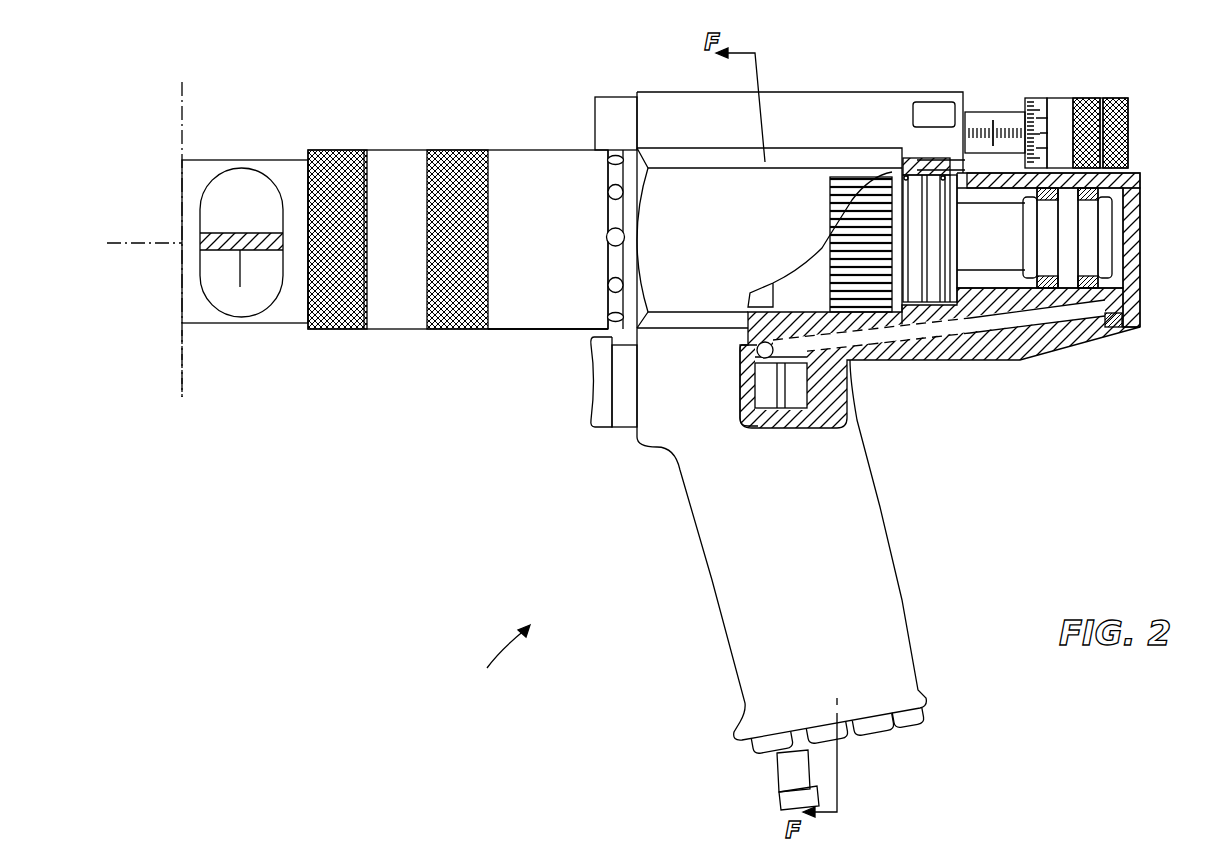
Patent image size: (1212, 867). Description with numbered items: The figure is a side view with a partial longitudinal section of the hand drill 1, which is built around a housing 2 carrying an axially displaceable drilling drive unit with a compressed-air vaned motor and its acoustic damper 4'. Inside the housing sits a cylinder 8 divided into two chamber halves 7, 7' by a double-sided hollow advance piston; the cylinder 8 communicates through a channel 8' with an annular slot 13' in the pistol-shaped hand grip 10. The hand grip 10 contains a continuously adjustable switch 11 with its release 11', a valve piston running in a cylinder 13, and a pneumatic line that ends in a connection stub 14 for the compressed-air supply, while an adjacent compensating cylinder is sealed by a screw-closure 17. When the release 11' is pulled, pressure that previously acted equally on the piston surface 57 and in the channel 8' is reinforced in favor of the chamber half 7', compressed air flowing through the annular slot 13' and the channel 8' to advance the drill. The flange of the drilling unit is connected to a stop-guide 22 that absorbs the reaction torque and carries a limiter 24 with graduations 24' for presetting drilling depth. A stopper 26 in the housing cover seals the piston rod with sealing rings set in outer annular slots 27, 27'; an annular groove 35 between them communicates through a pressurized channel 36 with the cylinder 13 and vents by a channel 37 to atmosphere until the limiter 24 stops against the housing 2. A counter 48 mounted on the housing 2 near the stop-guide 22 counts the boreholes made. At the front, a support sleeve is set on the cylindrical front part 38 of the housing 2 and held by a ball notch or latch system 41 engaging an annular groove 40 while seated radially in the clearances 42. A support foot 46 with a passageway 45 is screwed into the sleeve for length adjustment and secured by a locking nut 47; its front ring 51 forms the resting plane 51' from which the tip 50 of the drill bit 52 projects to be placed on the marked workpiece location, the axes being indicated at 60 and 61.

The hand drill 1 is at (503, 654).
The housing 2 is at (668, 110).
The acoustic damper 4' is at (820, 242).
The chamber half 7 is at (1031, 238).
The chamber half 7' is at (1130, 245).
The cylinder 8 is at (1067, 249).
The channel 8' is at (947, 345).
The hand grip 10 is at (892, 615).
The continuously adjustable switch 11 is at (619, 411).
The release 11' is at (573, 387).
The cylinder 13 is at (799, 408).
The annular slot 13' is at (731, 355).
The connection stub 14 is at (783, 748).
The screw-closure 17 is at (880, 728).
The stop-guide 22 is at (990, 124).
The limiter 24 is at (1082, 106).
The graduations 24' is at (1042, 105).
The stopper 26 is at (935, 207).
The outer annular slot 27 is at (902, 224).
The outer annular slot 27' is at (901, 203).
The annular groove 35 is at (925, 254).
The pressurized channel 36 is at (925, 333).
The channel 37 is at (962, 125).
The front part 38 is at (562, 330).
The annular groove 40 is at (607, 258).
The ball notch or latch system 41 is at (613, 113).
The clearances 42 is at (606, 190).
The passageway 45 is at (262, 185).
The support foot 46 is at (297, 324).
The locking nut 47 is at (335, 156).
The counter 48 is at (910, 107).
The drill bit tip 50 is at (180, 244).
The front ring 51 is at (155, 239).
The resting plane 51' is at (143, 363).
The drill bit 52 is at (236, 281).
The piston surface 57 is at (791, 420).
The horizontal axis 60 is at (150, 252).
The spacer 61 is at (1110, 226).